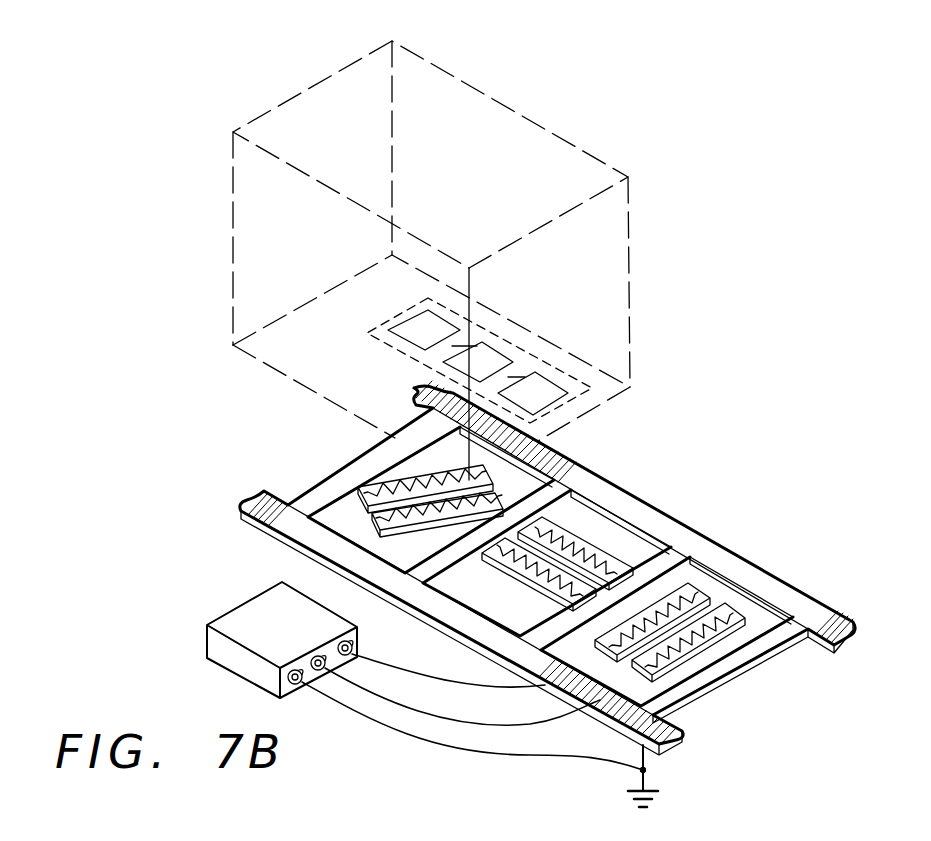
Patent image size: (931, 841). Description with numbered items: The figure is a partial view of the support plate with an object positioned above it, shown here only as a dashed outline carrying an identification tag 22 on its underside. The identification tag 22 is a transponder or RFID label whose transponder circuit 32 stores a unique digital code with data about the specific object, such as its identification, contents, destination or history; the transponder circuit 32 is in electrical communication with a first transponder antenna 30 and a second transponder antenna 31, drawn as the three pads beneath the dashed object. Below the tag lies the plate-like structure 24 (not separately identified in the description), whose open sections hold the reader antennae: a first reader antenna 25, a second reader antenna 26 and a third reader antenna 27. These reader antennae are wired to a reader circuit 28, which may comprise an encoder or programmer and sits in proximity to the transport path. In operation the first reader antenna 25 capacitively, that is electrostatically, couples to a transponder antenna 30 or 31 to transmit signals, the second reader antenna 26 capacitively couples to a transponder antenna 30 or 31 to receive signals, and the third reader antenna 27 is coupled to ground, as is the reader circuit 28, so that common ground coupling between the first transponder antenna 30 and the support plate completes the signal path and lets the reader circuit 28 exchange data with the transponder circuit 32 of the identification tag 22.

The identification tag 22 is at (538, 357).
The frame 24 is at (333, 513).
The reader antenna 25 is at (385, 490).
The second reader antenna 26 is at (422, 525).
The third reader antenna 27 is at (646, 771).
The reader circuit 28 is at (250, 612).
The first transponder antenna 30 is at (430, 322).
The second transponder antenna 31 is at (555, 393).
The transponder circuit 32 is at (492, 357).